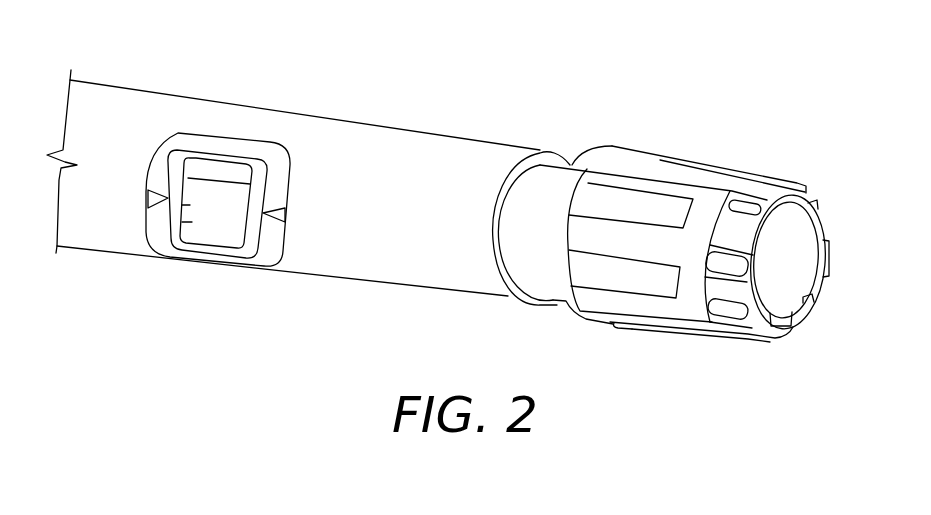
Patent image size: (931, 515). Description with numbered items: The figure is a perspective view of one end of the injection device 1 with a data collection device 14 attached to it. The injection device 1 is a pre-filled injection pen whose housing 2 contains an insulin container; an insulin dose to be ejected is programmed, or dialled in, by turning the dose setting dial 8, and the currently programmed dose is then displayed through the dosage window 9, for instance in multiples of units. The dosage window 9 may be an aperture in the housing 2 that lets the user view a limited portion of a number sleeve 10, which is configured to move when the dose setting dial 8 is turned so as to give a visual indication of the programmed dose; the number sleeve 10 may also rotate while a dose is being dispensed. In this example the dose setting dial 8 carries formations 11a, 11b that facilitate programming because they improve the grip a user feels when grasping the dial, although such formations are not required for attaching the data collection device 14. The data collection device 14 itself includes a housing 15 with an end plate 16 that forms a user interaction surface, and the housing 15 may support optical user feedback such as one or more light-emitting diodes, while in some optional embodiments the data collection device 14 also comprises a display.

The injection device 1 is at (89, 35).
The housing 2 is at (100, 247).
The dose setting dial 8 is at (657, 237).
The dosage window 9 is at (248, 143).
The number sleeve 10 is at (213, 240).
The formation 11a is at (627, 202).
The formation 11b is at (608, 278).
The data collection device 14 is at (688, 348).
The housing 15 is at (596, 146).
The end plate 16 is at (800, 213).